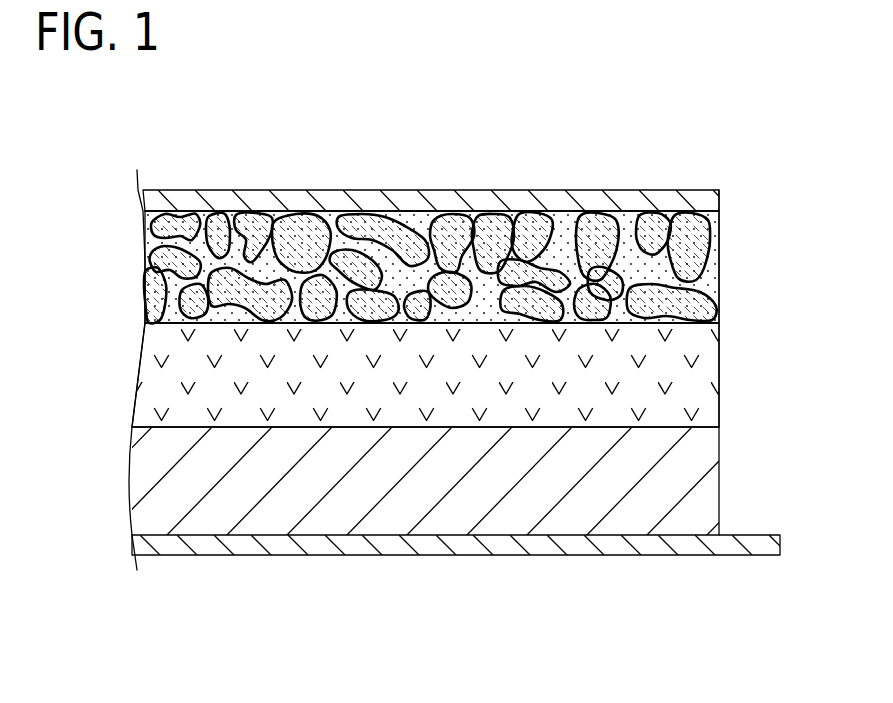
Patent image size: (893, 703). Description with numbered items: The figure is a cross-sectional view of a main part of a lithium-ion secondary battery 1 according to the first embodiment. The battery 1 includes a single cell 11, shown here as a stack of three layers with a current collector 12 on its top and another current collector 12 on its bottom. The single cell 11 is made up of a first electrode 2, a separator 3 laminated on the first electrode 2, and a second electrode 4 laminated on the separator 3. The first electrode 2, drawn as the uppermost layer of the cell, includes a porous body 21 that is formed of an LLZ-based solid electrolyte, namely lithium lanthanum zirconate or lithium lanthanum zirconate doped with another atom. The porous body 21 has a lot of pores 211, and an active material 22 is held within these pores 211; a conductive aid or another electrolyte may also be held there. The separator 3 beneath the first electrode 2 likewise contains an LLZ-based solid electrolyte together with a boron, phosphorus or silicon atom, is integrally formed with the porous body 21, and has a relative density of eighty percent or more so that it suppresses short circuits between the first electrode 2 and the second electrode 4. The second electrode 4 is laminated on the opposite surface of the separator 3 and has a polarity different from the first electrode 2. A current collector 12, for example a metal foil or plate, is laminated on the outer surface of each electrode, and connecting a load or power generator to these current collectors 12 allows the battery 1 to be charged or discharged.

The lithium-ion secondary battery 1 is at (441, 360).
The single cell 11 is at (441, 360).
The current collector 12 is at (173, 209).
The first electrode 2 is at (476, 180).
The porous body 21 is at (349, 214).
The pores 211 is at (405, 207).
The active material 22 is at (259, 280).
The separator 3 is at (698, 372).
The second electrode 4 is at (698, 467).